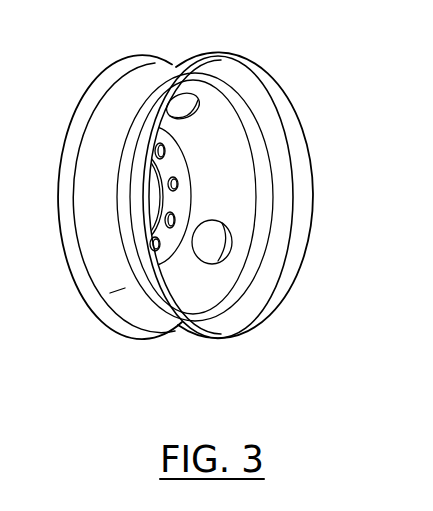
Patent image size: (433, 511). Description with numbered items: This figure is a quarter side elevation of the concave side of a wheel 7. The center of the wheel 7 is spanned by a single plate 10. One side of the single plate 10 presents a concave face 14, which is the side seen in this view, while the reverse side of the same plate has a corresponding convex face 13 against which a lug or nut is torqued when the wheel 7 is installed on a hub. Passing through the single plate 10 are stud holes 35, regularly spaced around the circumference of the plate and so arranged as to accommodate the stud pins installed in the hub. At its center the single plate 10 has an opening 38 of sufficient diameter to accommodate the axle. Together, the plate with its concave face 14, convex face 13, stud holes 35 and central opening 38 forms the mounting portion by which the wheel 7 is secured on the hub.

The wheel 7 is at (77, 69).
The single plate 10 is at (225, 122).
The convex face 13 is at (85, 314).
The concave face 14 is at (202, 283).
The stud holes 35 is at (178, 183).
The opening 38 is at (166, 200).